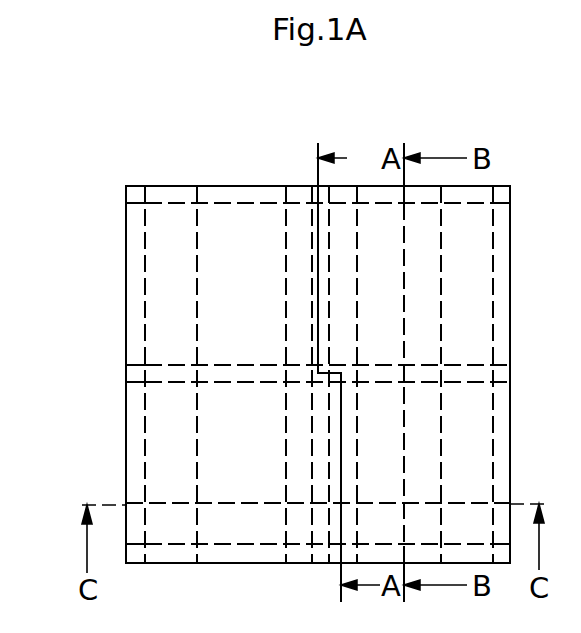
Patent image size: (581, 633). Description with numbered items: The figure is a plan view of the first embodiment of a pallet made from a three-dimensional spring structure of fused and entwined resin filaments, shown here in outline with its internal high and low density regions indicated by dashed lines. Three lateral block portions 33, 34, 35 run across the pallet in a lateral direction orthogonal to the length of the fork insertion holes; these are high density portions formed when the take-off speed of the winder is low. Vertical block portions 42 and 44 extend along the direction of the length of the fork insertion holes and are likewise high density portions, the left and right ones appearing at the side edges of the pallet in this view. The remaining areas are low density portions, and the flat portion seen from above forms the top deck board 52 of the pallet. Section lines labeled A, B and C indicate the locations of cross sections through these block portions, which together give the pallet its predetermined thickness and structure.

The lateral block portion 33 is at (228, 193).
The vertical block portion 42 is at (126, 272).
The top deck board 52 is at (170, 300).
The lateral block portion 34 is at (170, 377).
The lateral block portion 35 is at (275, 556).
The vertical block portion 44 is at (498, 275).